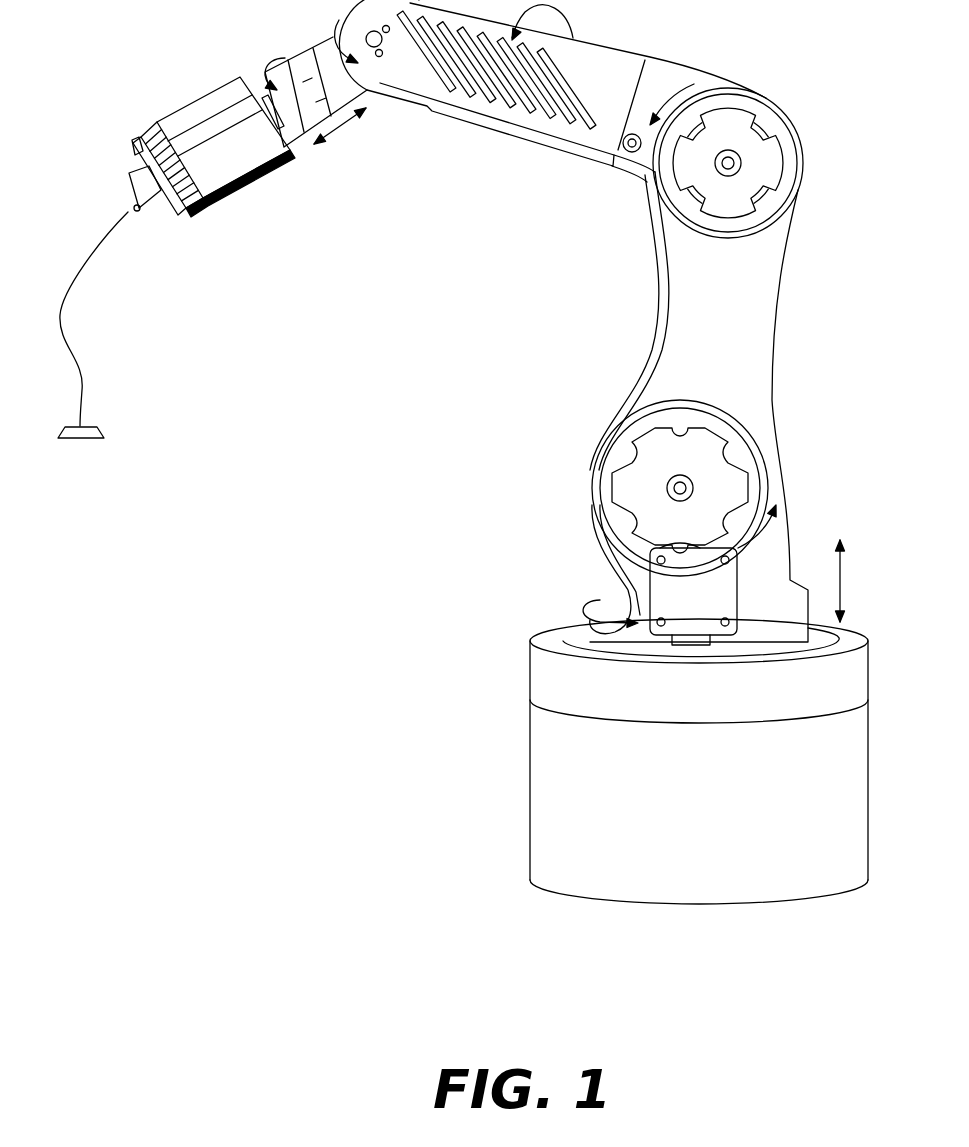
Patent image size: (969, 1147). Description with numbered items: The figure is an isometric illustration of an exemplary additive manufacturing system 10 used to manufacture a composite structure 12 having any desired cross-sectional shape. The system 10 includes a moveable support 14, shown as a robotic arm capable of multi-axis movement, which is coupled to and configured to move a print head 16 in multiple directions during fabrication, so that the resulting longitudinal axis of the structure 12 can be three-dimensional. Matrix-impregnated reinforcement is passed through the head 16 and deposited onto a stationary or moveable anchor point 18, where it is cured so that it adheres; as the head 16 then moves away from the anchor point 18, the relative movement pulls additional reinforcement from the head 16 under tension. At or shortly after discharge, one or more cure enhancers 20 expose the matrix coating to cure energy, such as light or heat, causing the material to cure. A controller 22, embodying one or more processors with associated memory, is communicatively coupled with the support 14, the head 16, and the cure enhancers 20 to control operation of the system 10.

The system 10 is at (463, 452).
The composite structure 12 is at (85, 388).
The moveable support 14 is at (699, 366).
The print head 16 is at (291, 165).
The anchor point 18 is at (82, 440).
The cure enhancer 20 is at (160, 204).
The controller 22 is at (683, 605).